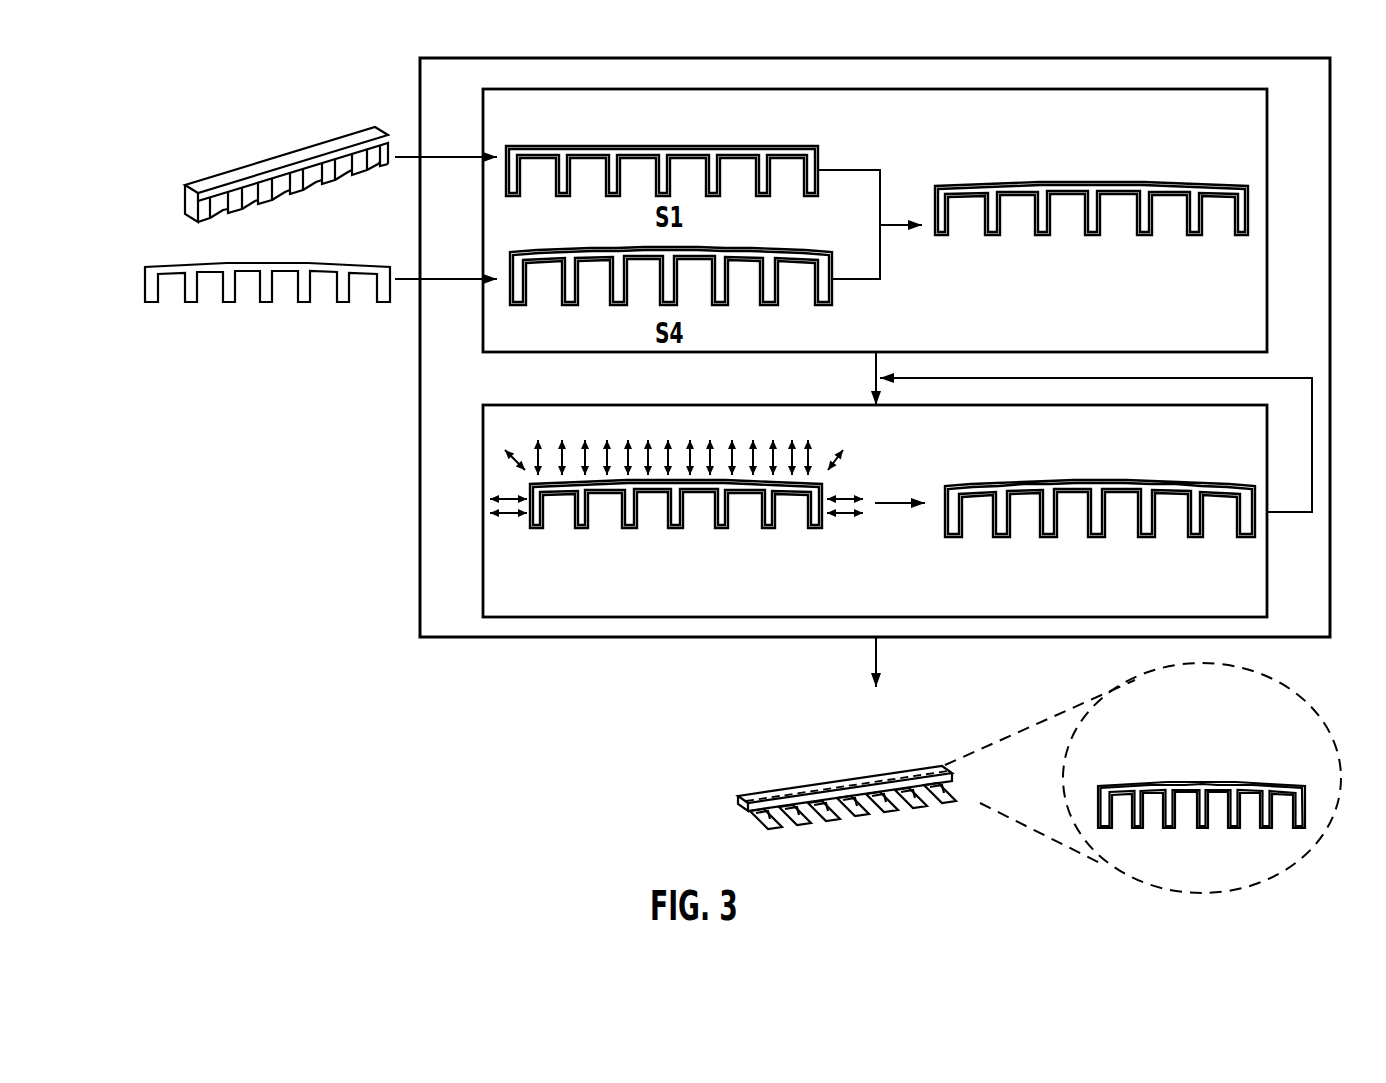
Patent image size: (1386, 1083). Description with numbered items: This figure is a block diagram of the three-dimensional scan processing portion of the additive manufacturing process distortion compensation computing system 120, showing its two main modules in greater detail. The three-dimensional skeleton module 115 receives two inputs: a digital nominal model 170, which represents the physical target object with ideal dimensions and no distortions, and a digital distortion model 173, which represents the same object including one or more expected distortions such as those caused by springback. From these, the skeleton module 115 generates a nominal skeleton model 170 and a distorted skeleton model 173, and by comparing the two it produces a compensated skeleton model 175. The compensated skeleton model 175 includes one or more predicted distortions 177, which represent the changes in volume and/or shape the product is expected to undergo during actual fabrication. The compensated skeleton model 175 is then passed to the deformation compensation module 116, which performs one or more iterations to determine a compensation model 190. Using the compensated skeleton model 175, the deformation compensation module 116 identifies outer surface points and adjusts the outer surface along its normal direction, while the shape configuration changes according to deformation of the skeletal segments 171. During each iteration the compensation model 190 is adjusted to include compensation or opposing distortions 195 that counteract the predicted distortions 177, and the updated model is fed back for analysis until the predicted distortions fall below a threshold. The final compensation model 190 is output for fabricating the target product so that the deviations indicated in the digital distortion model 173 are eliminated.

The AM process distortion compensation computing system 120 is at (492, 58).
The 3D skeleton module 115 is at (1267, 163).
The deformation compensation module 116 is at (1267, 578).
The digital nominal model 170 is at (205, 163).
The digital distortion model 173 is at (158, 252).
The compensated skeleton model 175 is at (961, 163).
The predicted distortions 177 is at (1119, 210).
The compensation model 190 is at (1032, 468).
The skeletal segments 171 is at (907, 770).
The opposing distortions 195 is at (858, 760).